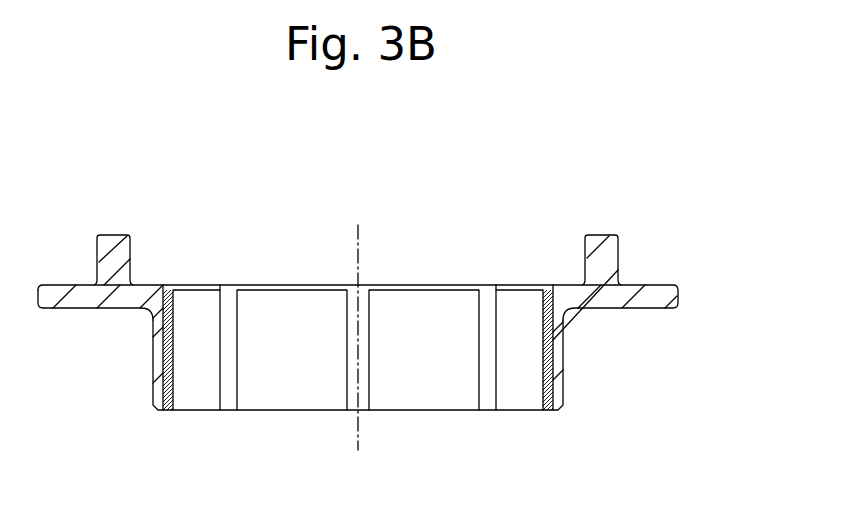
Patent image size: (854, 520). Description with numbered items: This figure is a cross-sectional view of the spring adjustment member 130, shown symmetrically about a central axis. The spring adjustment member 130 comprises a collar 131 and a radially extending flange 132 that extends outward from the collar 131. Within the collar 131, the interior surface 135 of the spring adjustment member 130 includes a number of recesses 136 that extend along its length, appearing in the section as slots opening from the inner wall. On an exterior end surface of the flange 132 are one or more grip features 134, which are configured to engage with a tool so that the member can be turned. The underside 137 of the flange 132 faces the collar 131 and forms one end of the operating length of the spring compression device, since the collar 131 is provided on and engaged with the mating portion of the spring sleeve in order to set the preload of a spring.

The spring adjustment member 130 is at (136, 170).
The collar 131 is at (563, 360).
The radially extending flange 132 is at (677, 294).
The grip features 134 is at (621, 242).
The interior surface 135 is at (267, 390).
The recesses 136 is at (228, 292).
The underside of the flange 137 is at (82, 310).